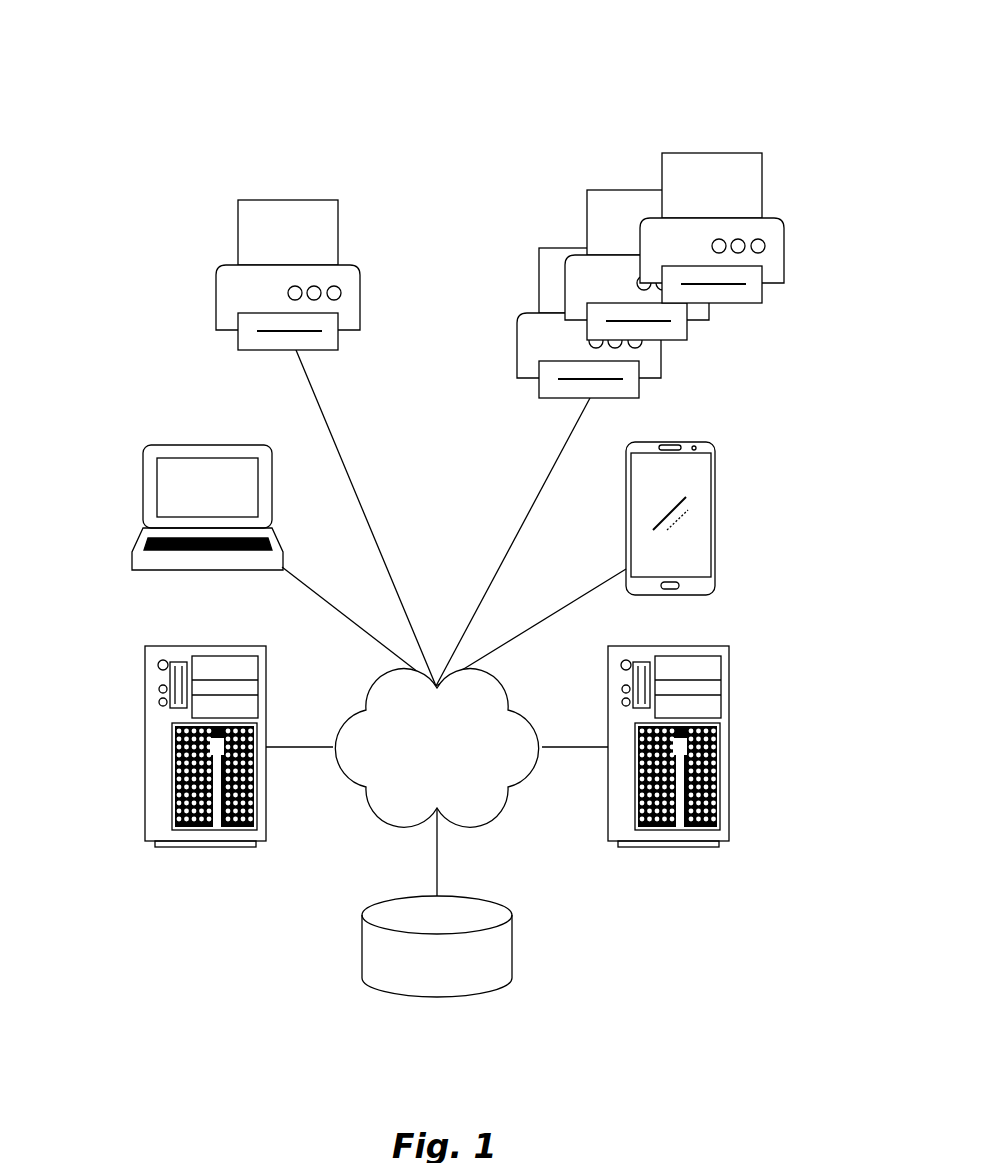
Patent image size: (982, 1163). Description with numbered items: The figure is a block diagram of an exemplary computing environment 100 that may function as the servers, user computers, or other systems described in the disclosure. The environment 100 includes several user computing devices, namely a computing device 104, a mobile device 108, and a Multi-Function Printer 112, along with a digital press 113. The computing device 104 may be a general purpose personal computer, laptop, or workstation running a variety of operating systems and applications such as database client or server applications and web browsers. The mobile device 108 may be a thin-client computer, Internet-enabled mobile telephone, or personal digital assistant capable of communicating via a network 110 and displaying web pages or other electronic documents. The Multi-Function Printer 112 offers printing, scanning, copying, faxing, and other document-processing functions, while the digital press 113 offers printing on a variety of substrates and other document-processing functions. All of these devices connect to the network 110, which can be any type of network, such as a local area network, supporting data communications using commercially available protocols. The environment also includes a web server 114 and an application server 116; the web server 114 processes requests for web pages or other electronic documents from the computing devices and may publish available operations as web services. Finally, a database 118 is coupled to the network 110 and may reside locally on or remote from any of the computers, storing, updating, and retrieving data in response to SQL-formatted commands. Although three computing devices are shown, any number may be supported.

The computing environment 100 is at (571, 72).
The computing device 104 is at (143, 490).
The mobile device 108 is at (715, 517).
The network 110 is at (483, 822).
The Multi-Function Printer 112 is at (238, 225).
The digital press 113 is at (786, 221).
The web server 114 is at (145, 747).
The application server 116 is at (729, 747).
The database 118 is at (512, 947).